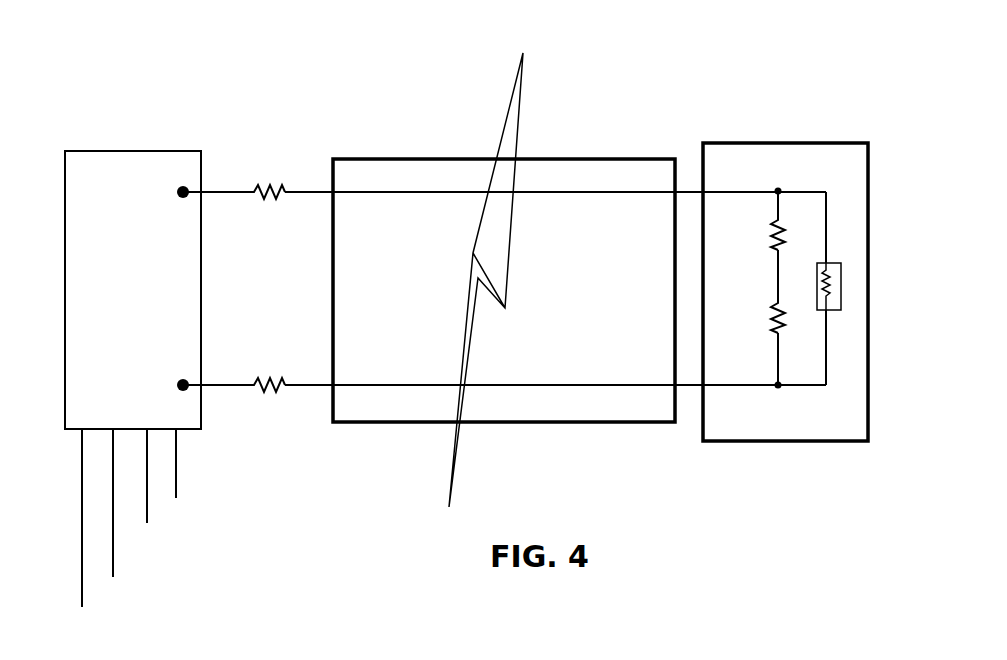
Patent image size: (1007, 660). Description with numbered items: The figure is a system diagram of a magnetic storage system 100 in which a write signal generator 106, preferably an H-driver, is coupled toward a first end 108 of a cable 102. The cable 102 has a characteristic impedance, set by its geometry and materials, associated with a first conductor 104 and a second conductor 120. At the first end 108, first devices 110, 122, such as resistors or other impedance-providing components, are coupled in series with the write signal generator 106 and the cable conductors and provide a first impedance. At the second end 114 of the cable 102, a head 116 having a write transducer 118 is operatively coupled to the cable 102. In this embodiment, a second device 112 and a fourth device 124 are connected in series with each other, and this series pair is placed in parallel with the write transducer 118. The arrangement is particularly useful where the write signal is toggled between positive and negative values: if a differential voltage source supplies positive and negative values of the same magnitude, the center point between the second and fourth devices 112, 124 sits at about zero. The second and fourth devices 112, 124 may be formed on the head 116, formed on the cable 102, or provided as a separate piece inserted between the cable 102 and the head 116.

The magnetic storage system 100 is at (131, 124).
The write signal generator 106 is at (88, 151).
The first device 110 is at (266, 186).
The first device 122 is at (266, 390).
The first end 108 is at (358, 138).
The cable 102 is at (450, 158).
The first conductor 104 is at (550, 190).
The second conductor 120 is at (556, 387).
The second end 114 is at (648, 138).
The head 116 is at (838, 143).
The second device 112 is at (775, 222).
The fourth device 124 is at (772, 318).
The write transducer 118 is at (842, 290).